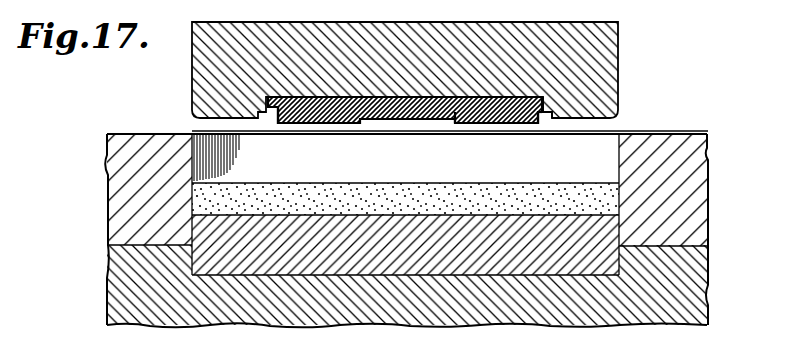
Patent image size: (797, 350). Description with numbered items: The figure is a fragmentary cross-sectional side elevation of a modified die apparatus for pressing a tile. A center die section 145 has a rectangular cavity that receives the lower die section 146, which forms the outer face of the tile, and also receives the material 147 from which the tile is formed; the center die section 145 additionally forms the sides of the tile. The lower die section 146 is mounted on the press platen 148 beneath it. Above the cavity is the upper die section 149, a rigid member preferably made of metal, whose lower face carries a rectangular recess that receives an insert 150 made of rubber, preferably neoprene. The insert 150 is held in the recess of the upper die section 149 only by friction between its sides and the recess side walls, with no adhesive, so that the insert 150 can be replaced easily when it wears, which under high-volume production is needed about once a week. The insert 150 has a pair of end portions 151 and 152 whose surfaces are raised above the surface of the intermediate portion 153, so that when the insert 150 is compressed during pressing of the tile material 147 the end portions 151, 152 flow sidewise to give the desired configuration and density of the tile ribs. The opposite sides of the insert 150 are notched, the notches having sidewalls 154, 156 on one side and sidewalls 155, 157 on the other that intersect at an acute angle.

The center die section 145 is at (112, 207).
The lower die section 146 is at (337, 268).
The material 147 is at (392, 184).
The press platen 148 is at (690, 270).
The upper die section 149 is at (612, 88).
The insert 150 is at (493, 124).
The end portion 151 is at (340, 122).
The end portion 152 is at (458, 124).
The intermediate portion 153 is at (388, 121).
The notch sidewall 154 is at (276, 112).
The notch sidewall 155 is at (541, 113).
The notch sidewall 156 is at (268, 119).
The notch sidewall 157 is at (548, 113).